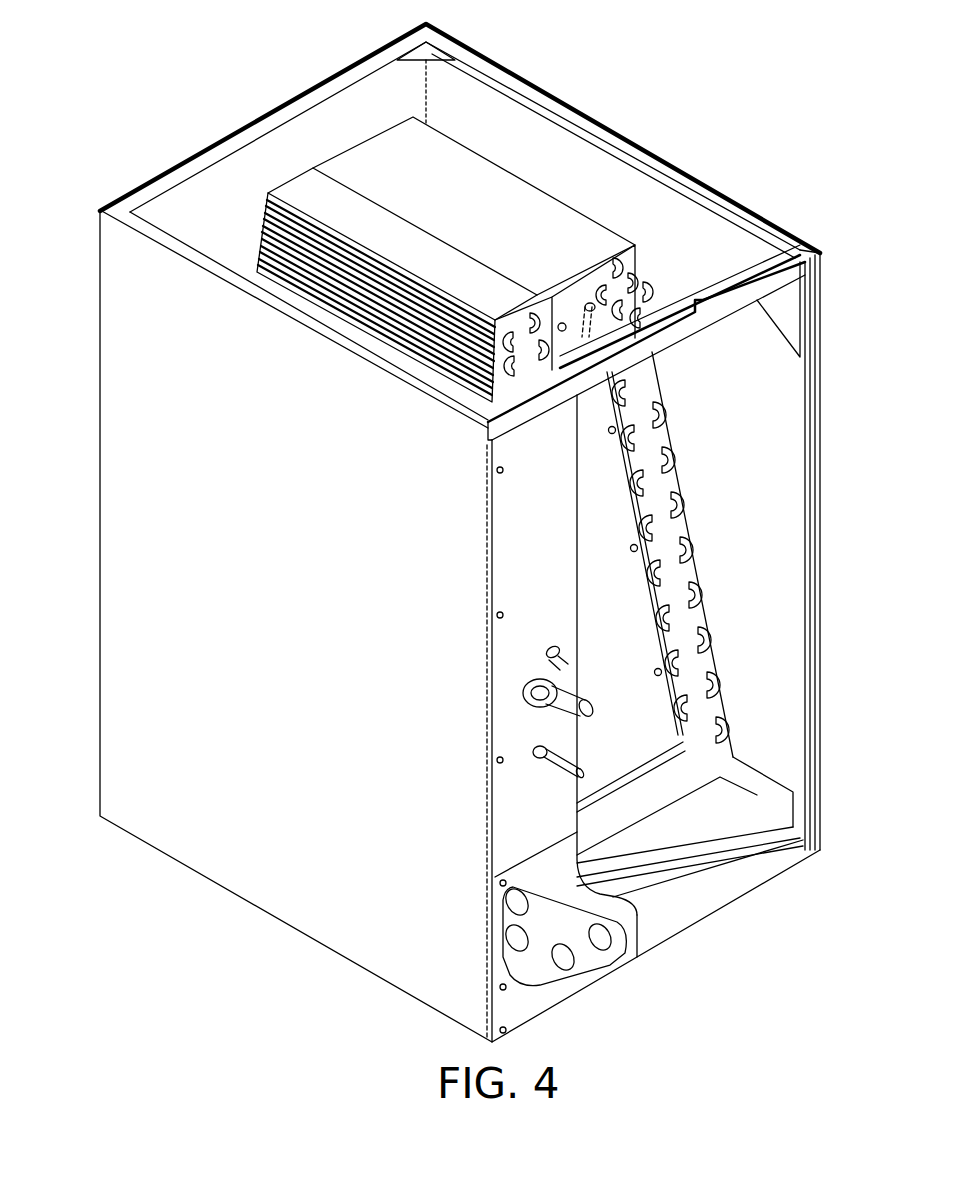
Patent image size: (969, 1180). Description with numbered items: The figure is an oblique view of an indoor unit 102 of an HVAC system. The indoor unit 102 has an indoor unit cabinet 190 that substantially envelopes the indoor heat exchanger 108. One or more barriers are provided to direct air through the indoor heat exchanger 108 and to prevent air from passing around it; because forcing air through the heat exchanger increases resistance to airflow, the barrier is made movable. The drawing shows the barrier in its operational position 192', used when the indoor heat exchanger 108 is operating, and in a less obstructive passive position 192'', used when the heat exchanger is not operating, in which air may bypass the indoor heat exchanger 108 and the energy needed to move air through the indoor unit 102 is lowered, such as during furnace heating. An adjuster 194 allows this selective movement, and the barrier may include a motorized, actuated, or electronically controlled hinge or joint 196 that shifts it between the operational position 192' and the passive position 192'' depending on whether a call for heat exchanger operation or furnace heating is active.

The indoor unit 102 is at (748, 110).
The indoor heat exchanger 108 is at (633, 263).
The indoor unit cabinet 190 is at (100, 606).
The operational position of barrier 192' is at (578, 301).
The passive position of barrier 192'' is at (693, 554).
The adjuster 194 is at (613, 785).
The hinge and/or joint 196 is at (667, 816).